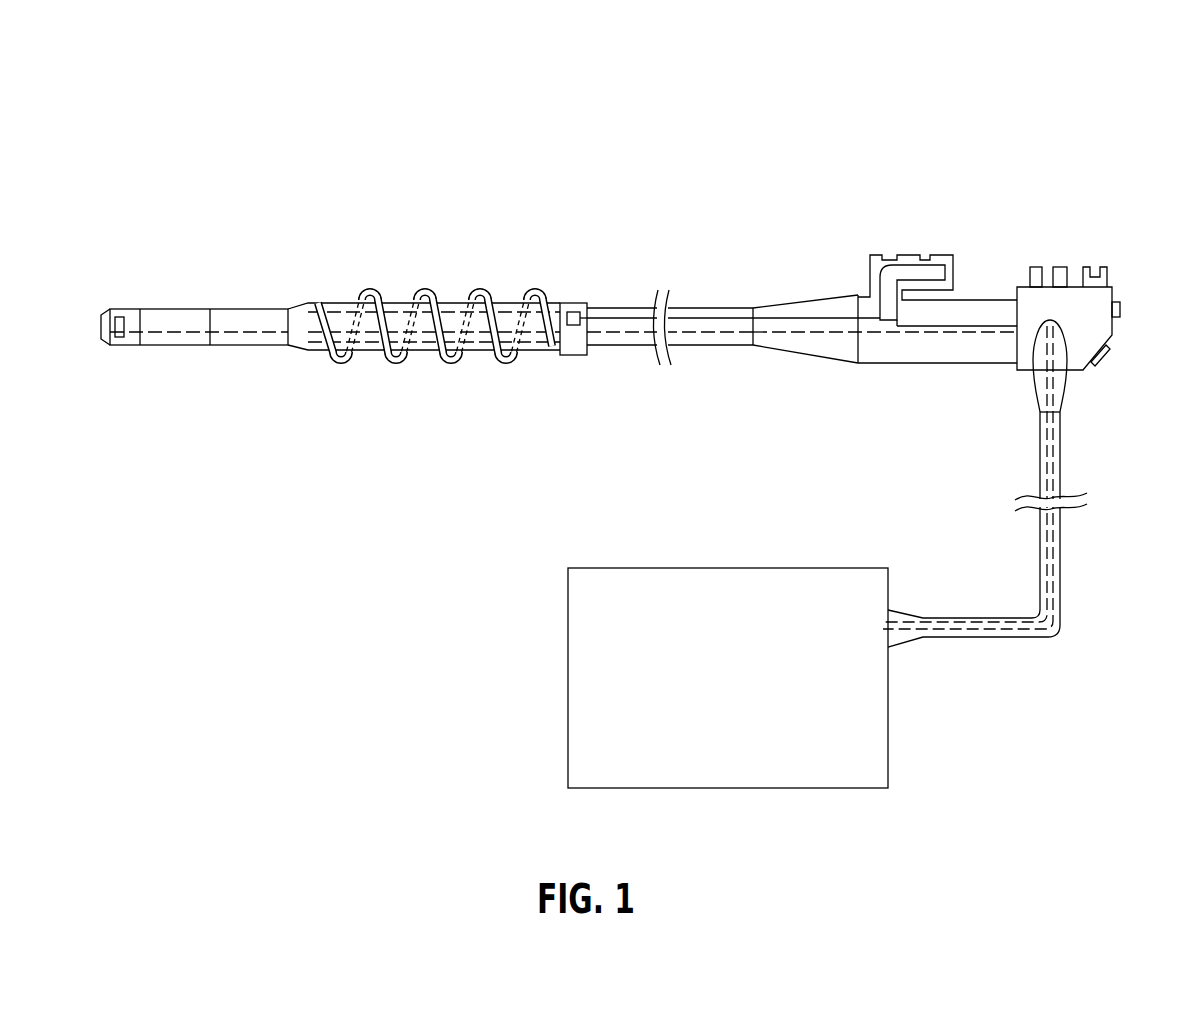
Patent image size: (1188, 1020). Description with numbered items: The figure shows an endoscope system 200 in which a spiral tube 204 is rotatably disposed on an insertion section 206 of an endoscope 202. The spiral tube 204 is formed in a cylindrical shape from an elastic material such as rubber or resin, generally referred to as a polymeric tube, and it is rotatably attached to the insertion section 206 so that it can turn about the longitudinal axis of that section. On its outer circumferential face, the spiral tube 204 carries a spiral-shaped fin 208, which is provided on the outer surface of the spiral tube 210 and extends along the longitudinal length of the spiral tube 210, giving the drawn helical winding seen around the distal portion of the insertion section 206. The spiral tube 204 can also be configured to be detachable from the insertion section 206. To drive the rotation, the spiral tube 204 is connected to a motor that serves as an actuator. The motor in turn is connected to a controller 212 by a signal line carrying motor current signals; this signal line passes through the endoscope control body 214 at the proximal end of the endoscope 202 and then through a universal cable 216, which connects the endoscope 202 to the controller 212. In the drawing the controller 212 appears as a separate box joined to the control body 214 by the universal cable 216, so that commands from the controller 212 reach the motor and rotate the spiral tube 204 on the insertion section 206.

The endoscope system 200 is at (618, 62).
The endoscope 202 is at (617, 261).
The spiral tube 204 is at (352, 273).
The insertion section 206 is at (696, 306).
The spiral-shaped fin 208 is at (378, 291).
The spiral tube 210 is at (331, 303).
The controller 212 is at (704, 698).
The endoscope control body 214 is at (1066, 249).
The universal cable 216 is at (1062, 572).